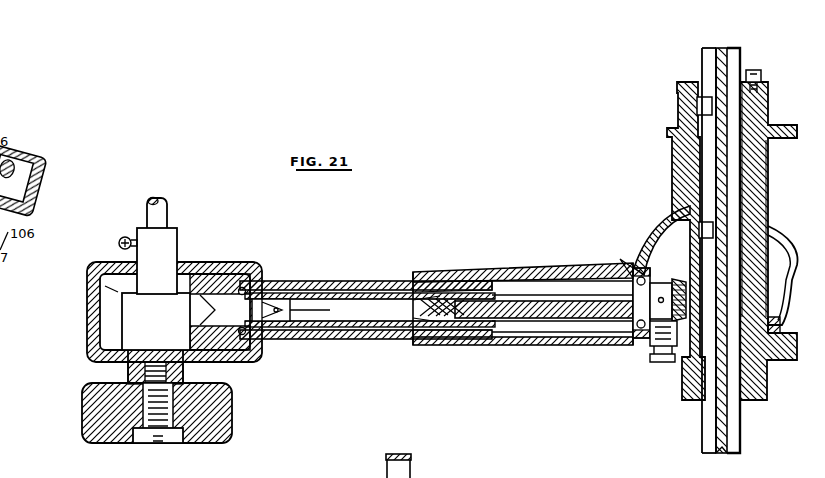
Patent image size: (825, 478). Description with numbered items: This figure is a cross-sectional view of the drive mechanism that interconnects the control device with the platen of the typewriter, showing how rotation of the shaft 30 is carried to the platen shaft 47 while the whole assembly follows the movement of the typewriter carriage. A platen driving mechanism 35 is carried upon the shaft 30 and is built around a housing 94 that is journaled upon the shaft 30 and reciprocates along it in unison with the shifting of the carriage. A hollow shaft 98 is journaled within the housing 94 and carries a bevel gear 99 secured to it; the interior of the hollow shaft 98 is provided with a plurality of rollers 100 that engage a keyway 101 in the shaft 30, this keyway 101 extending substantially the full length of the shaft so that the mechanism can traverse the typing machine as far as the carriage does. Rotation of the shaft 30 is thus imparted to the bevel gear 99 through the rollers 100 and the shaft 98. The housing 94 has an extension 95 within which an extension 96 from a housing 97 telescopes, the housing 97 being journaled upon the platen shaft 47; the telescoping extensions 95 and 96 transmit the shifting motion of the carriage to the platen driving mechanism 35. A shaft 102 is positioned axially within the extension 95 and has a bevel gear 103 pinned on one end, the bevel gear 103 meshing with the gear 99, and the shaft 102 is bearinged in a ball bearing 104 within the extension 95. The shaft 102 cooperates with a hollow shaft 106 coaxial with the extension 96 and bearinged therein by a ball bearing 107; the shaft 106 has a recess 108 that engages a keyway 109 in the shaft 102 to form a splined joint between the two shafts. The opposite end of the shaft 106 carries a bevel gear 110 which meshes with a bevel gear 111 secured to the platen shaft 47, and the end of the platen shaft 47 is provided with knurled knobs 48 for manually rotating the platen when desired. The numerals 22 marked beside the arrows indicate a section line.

The shaft 30 is at (709, 49).
The keyway 101 is at (702, 65).
The rollers 100 is at (697, 106).
The housing 94 is at (672, 186).
The hollow shaft 98 is at (768, 205).
The platen driving mechanism 35 is at (770, 178).
The bevel gear 99 is at (774, 320).
The housing 97 is at (221, 264).
The platen shaft 47 is at (167, 210).
The bevel gear 111 is at (110, 297).
The section line 22 is at (215, 318).
The bevel gear 110 is at (207, 338).
The knurled knobs 48 is at (92, 436).
The ball bearing 107 is at (246, 336).
The hollow shaft 106 is at (360, 321).
The extension 96 is at (380, 281).
The recess 108 is at (438, 297).
The extension 95 is at (521, 268).
The keyway 109 is at (570, 296).
The ball bearing 104 is at (639, 278).
The shaft 102 is at (553, 318).
The bevel gear 103 is at (652, 340).